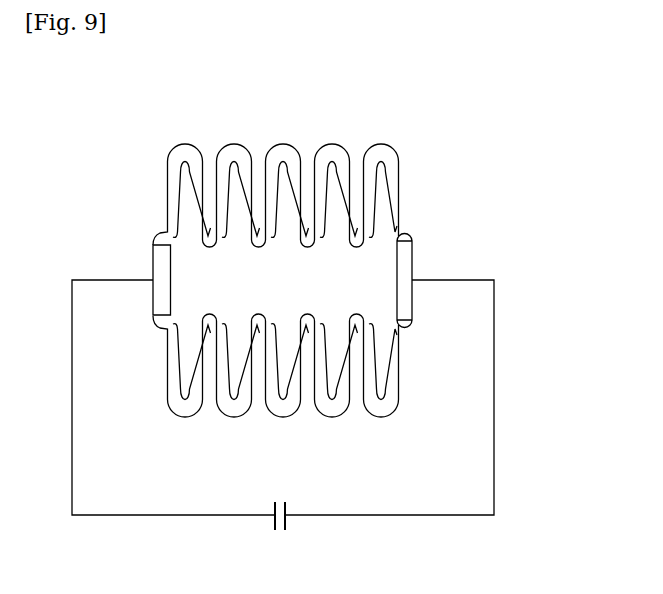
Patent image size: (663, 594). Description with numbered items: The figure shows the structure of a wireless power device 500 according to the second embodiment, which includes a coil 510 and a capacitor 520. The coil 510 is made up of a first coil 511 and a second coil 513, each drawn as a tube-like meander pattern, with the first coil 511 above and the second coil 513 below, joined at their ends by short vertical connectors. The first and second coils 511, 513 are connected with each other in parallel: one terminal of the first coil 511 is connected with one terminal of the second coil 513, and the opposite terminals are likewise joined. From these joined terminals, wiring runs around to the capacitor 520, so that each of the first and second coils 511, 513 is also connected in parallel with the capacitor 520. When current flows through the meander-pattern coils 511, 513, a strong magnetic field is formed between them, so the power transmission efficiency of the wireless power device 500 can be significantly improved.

The resonant circuit 500 is at (73, 113).
The coil 510 is at (550, 210).
The first coil 511 is at (397, 211).
The second coil 513 is at (397, 358).
The capacitor 520 is at (293, 503).